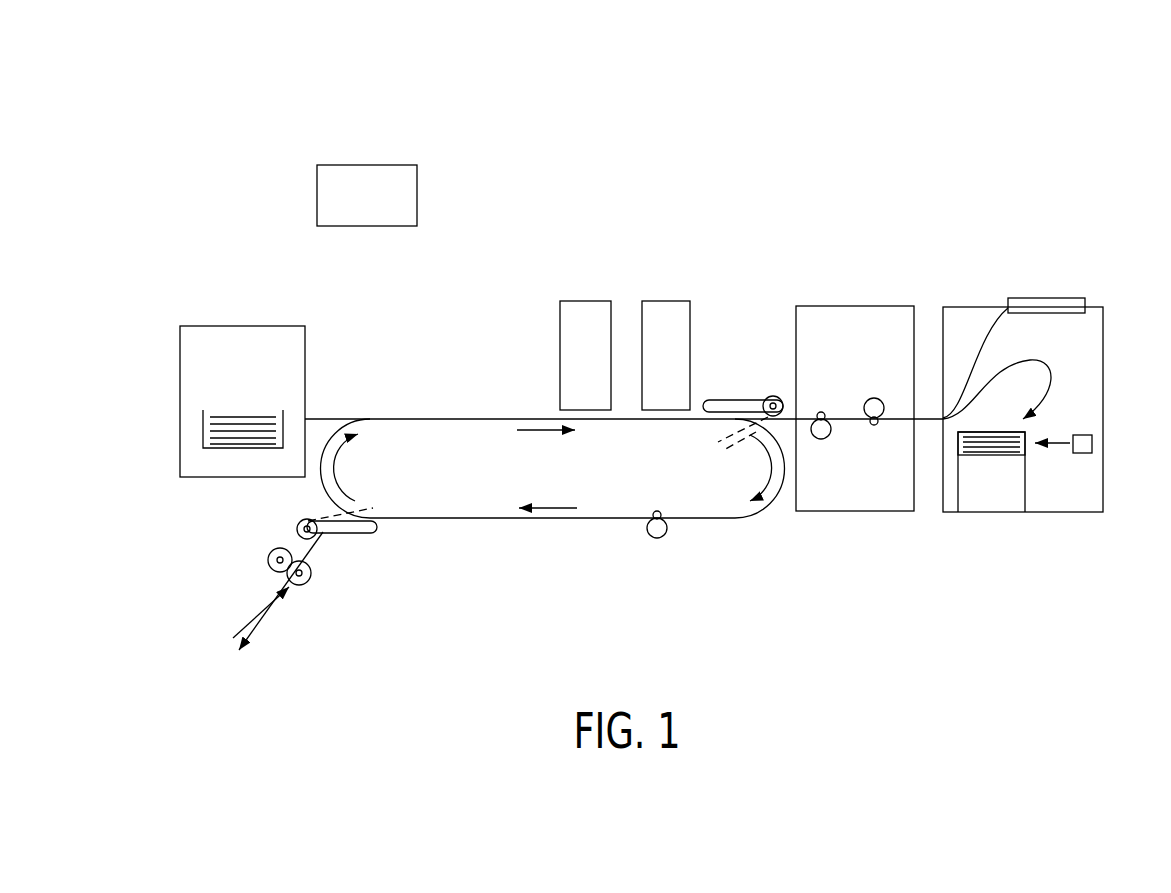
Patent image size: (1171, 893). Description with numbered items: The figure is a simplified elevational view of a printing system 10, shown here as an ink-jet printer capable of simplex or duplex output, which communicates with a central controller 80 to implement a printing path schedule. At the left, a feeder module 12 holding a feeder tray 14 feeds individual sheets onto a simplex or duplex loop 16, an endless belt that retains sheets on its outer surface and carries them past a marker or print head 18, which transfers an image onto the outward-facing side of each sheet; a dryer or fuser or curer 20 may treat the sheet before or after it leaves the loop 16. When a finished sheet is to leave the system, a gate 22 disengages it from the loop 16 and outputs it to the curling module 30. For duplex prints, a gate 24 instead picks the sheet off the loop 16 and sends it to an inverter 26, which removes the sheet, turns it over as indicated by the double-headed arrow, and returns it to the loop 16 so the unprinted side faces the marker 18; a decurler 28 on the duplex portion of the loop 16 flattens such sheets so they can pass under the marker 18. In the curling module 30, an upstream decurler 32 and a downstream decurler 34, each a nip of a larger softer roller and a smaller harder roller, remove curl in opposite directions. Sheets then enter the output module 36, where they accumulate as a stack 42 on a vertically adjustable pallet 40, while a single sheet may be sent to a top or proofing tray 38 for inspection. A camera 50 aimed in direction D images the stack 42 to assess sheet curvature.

The printing system 10 is at (988, 127).
The feeder module 12 is at (212, 326).
The feeder tray 14 is at (203, 430).
The simplex or duplex loop 16 is at (427, 418).
The marker or print head 18 is at (585, 301).
The dryer or fuser or curer 20 is at (668, 301).
The gate 22 is at (770, 397).
The gate 24 is at (298, 527).
The inverter 26 is at (253, 574).
The decurler or duplex decurler 28 is at (656, 547).
The curling module 30 is at (832, 306).
The entrance or upstream decurler 32 is at (820, 445).
The exit or downstream decurler 34 is at (874, 393).
The output module 36 is at (1103, 347).
The top or proofing tray 38 is at (1085, 297).
The pallet 40 is at (982, 497).
The stack of print sheets or substrates 42 is at (958, 446).
The camera 50 is at (1093, 445).
The central controller 80 is at (387, 165).
The direction D is at (1067, 447).